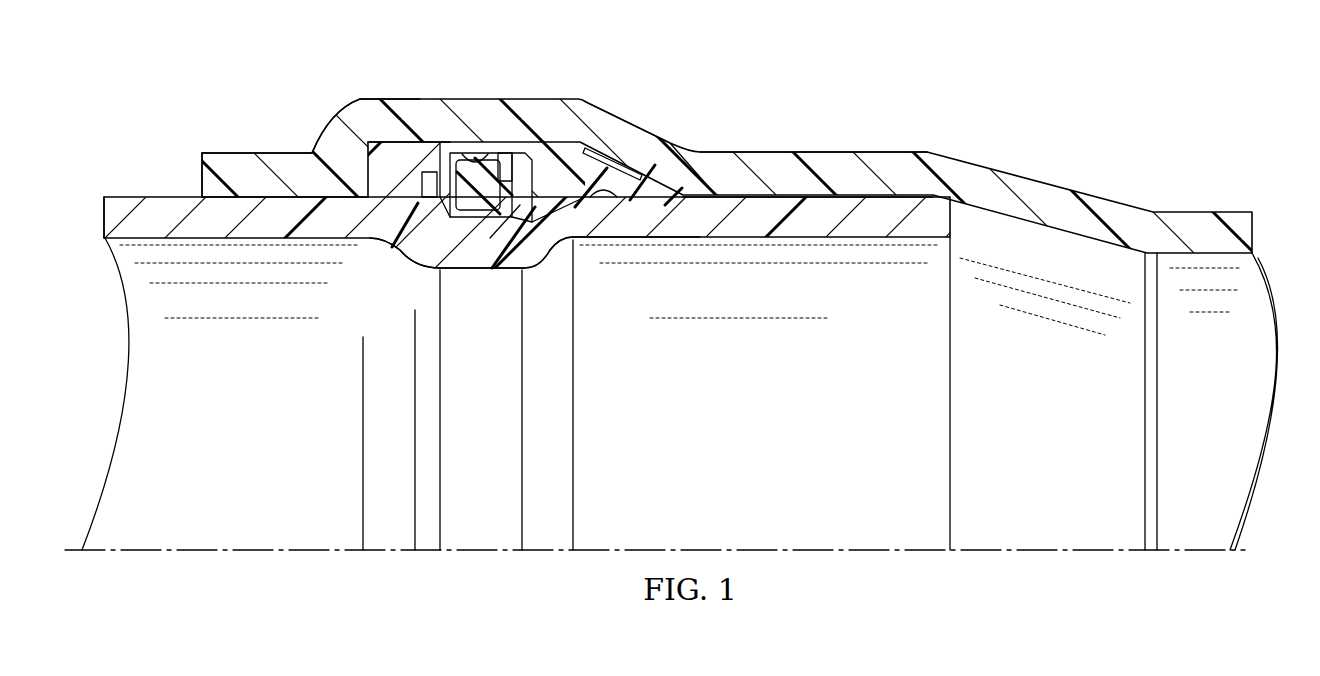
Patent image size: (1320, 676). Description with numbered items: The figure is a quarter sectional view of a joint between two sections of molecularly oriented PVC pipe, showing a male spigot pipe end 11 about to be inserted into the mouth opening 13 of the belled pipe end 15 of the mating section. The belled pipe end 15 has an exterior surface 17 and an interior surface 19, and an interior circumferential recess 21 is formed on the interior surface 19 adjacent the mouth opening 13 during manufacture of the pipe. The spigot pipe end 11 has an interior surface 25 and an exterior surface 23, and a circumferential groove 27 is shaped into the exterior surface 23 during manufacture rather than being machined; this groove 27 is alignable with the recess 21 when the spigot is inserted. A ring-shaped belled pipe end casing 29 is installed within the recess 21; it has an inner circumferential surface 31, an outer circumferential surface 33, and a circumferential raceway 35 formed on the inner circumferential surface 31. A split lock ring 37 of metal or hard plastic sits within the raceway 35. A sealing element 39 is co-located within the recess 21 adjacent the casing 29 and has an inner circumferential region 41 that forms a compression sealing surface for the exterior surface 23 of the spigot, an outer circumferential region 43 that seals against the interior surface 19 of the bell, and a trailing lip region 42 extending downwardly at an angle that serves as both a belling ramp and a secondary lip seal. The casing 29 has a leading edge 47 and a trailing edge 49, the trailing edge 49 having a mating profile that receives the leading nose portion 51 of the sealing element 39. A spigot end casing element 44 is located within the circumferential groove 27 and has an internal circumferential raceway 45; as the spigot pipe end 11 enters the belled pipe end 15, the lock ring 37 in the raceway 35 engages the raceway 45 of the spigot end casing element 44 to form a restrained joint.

The spigot pipe end 11 is at (853, 227).
The mouth opening 13 is at (200, 200).
The belled pipe end 15 is at (405, 118).
The exterior surface 17 is at (570, 105).
The interior surface 19 is at (757, 200).
The interior circumferential recess 21 is at (435, 150).
The exterior surface 23 is at (828, 175).
The interior surface 25 is at (668, 240).
The circumferential groove 27 is at (520, 245).
The belled pipe end casing 29 is at (360, 108).
The inner circumferential surface 31 is at (385, 215).
The outer circumferential surface 33 is at (498, 150).
The circumferential raceway 35 is at (462, 140).
The lock ring 37 is at (500, 245).
The sealing element 39 is at (600, 175).
The inner circumferential region 41 is at (600, 215).
The trailing lip region 42 is at (660, 165).
The outer circumferential region 43 is at (605, 140).
The spigot end casing element 44 is at (425, 235).
The internal circumferential raceway 45 is at (440, 230).
The leading edge 47 is at (337, 140).
The trailing edge 49 is at (530, 150).
The leading nose portion 51 is at (545, 235).